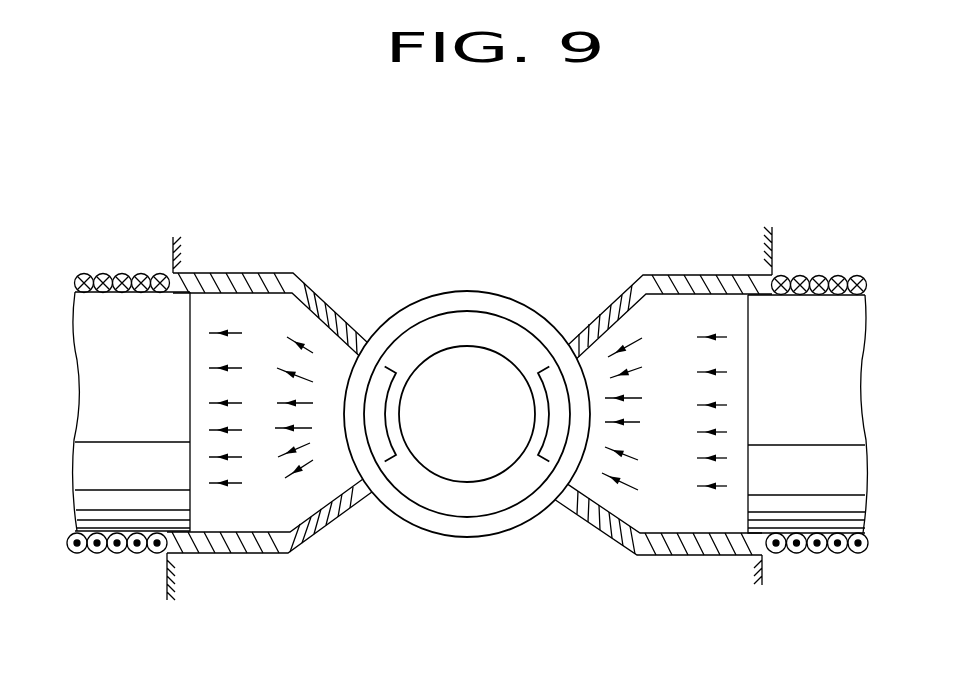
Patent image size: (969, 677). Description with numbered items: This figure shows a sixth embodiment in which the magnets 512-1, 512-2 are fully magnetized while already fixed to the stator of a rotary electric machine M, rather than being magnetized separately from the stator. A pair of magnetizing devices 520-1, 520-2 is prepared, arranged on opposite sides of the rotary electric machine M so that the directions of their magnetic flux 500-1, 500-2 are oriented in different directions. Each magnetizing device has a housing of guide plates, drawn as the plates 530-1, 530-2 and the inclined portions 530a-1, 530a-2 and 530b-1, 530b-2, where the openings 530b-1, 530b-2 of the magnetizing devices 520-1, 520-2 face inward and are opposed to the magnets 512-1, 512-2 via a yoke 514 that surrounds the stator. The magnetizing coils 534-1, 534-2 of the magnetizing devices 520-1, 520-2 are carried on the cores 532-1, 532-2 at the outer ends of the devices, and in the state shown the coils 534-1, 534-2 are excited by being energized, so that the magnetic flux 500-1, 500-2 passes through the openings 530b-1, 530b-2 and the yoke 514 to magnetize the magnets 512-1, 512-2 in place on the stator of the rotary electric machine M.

The magnetizing device 520-1 is at (268, 216).
The magnetizing device 520-2 is at (717, 218).
The first lower guide plate 530-1 is at (245, 553).
The second lower guide plate 530-2 is at (688, 545).
The first lower inclined guide portion 530a-1 is at (337, 507).
The second lower inclined guide portion 530a-2 is at (610, 523).
The opening 530b-1 is at (345, 356).
The opening 530b-2 is at (585, 353).
The first sheet stack 532-1 is at (140, 335).
The second sheet stack 532-2 is at (788, 485).
The magnetizing coil 534-1 is at (85, 270).
The magnetizing coil 534-2 is at (837, 552).
The magnetic flux 500-1 is at (297, 323).
The magnetic flux 500-2 is at (626, 345).
The magnet 512-1 is at (390, 368).
The magnet 512-2 is at (547, 457).
The yoke 514 is at (462, 530).
The rotary electric machine M is at (465, 291).